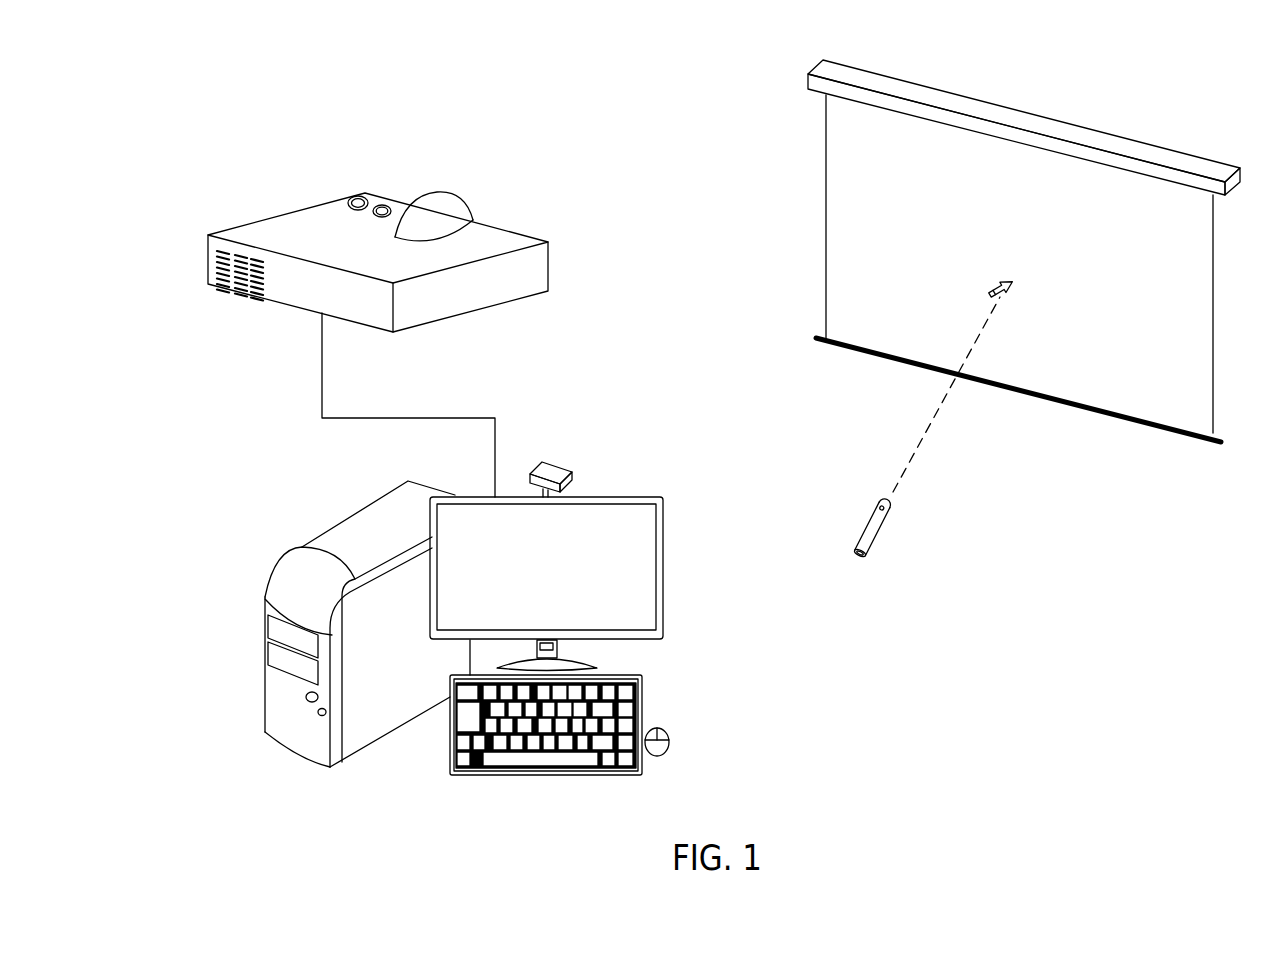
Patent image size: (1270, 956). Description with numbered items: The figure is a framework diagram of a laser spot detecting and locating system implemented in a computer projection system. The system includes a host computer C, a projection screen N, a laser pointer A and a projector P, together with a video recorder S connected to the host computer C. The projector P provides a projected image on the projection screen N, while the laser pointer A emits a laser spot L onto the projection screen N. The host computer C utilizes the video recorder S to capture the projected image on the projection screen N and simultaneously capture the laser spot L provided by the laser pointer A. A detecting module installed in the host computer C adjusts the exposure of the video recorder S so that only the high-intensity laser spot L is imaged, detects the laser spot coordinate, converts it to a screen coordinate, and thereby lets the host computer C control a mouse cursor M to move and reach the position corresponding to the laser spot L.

The projector P is at (378, 236).
The host computer C is at (310, 624).
The video recorder S is at (580, 449).
The projection screen N is at (1024, 293).
The laser spot L is at (1007, 278).
The mouse cursor M is at (993, 287).
The laser pointer A is at (901, 558).